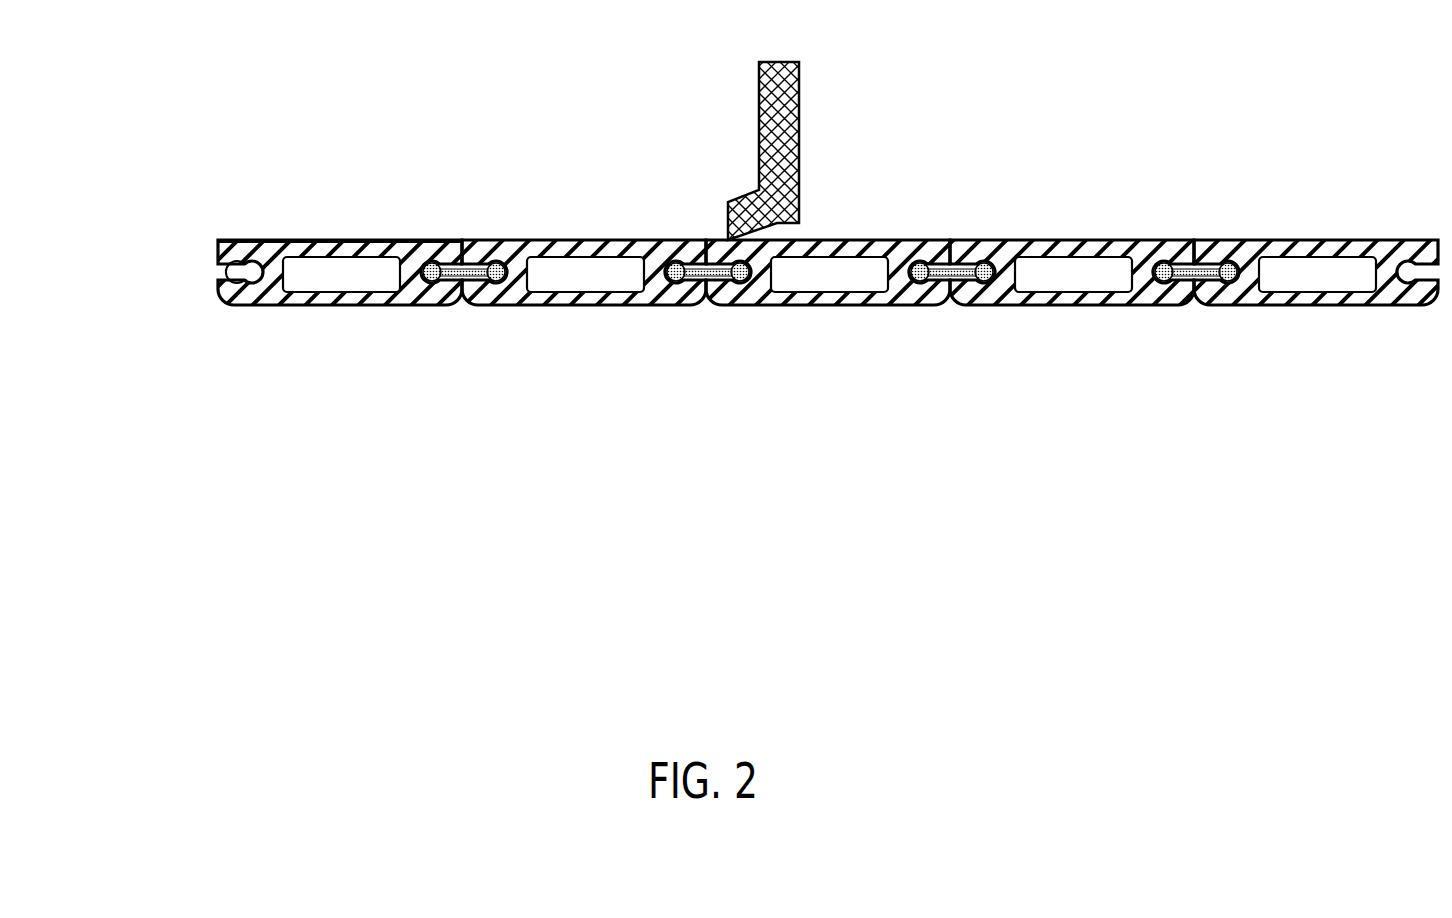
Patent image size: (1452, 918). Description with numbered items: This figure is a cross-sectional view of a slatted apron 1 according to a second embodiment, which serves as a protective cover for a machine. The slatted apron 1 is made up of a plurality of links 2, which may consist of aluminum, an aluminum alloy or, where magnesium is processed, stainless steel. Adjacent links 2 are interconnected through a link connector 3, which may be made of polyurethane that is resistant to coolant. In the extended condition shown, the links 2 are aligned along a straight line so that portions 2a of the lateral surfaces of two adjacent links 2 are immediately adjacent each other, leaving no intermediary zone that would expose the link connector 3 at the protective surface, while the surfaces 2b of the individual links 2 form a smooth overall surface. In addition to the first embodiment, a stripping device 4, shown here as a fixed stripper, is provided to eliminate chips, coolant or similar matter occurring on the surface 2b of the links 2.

The slatted apron 1 is at (785, 338).
The link 2 is at (785, 281).
The portion of lateral surface 2a is at (218, 240).
The surface 2b is at (378, 240).
The link connector 3 is at (463, 240).
The stripping device 4 is at (800, 105).